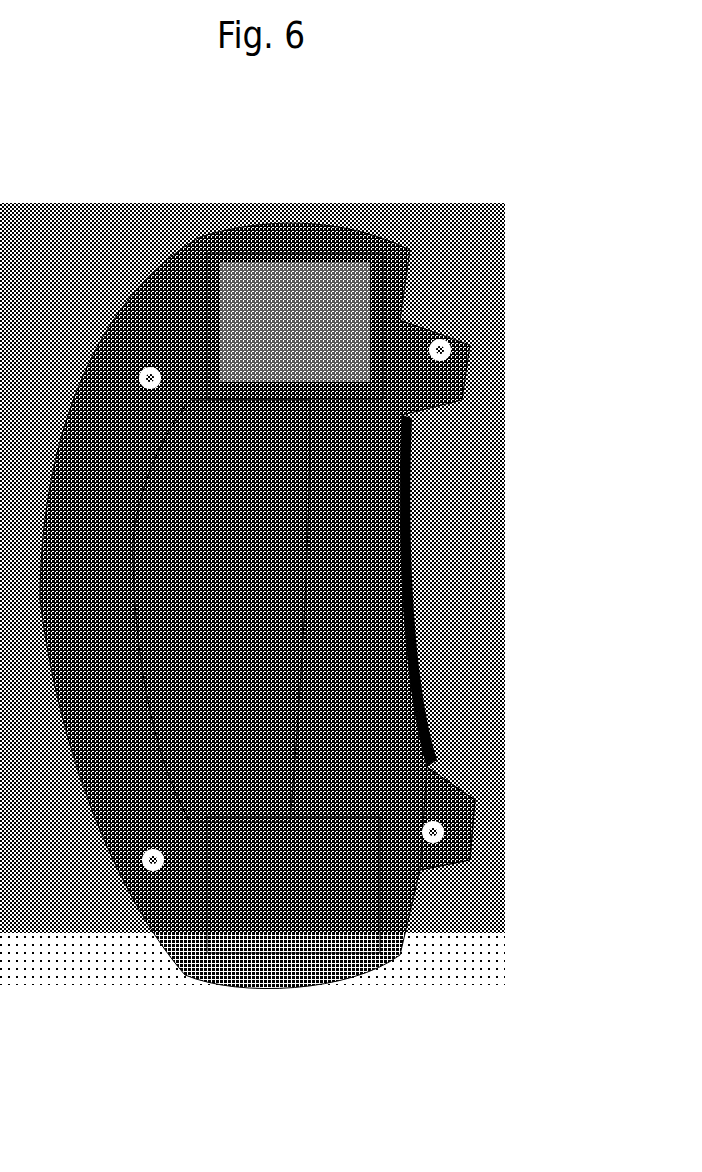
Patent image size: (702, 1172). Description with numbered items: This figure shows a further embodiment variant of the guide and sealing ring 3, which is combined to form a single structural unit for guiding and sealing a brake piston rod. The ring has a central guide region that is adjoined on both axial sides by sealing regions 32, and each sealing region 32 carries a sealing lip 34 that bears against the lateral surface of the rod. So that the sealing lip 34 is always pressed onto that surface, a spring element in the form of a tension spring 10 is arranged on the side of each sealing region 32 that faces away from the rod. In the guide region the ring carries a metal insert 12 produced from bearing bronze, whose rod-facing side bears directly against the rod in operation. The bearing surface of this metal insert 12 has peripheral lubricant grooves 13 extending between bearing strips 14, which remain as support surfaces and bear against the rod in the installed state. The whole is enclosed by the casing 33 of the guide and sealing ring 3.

The guide and sealing ring 3 is at (441, 557).
The tension spring 10 is at (457, 853).
The metal insert 12 is at (352, 318).
The lubricant groove 13 is at (240, 805).
The bearing strip 14 is at (263, 547).
The sealing region 32 is at (413, 626).
The casing 33 is at (258, 990).
The sealing lip 34 is at (442, 787).